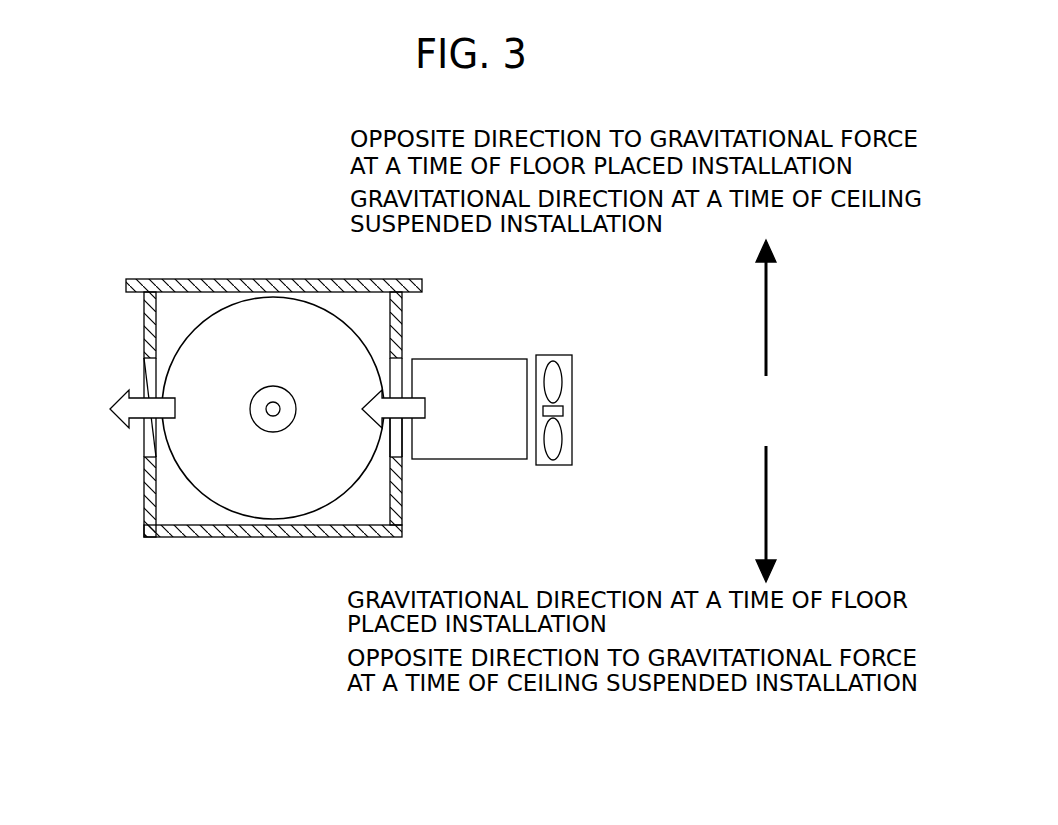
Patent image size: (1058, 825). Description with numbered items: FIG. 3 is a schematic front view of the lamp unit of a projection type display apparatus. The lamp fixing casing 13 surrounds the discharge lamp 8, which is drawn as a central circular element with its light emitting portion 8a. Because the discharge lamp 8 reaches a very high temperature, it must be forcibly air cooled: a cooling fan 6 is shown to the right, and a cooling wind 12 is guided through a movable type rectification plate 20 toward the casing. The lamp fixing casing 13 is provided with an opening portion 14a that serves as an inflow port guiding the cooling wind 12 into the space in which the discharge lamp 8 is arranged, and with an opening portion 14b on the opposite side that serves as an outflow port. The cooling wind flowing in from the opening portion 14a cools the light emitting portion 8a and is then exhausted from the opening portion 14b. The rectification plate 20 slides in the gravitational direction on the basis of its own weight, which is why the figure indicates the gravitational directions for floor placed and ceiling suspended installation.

The lamp fixing casing 13 is at (232, 279).
The discharge lamp 8 is at (268, 410).
The light emitting portion 8a is at (290, 422).
The movable type rectification plate 20 is at (507, 359).
The cooling fan 6 is at (557, 355).
The cooling wind 12 is at (417, 402).
The opening portion 14a is at (397, 443).
The opening portion 14b is at (150, 447).